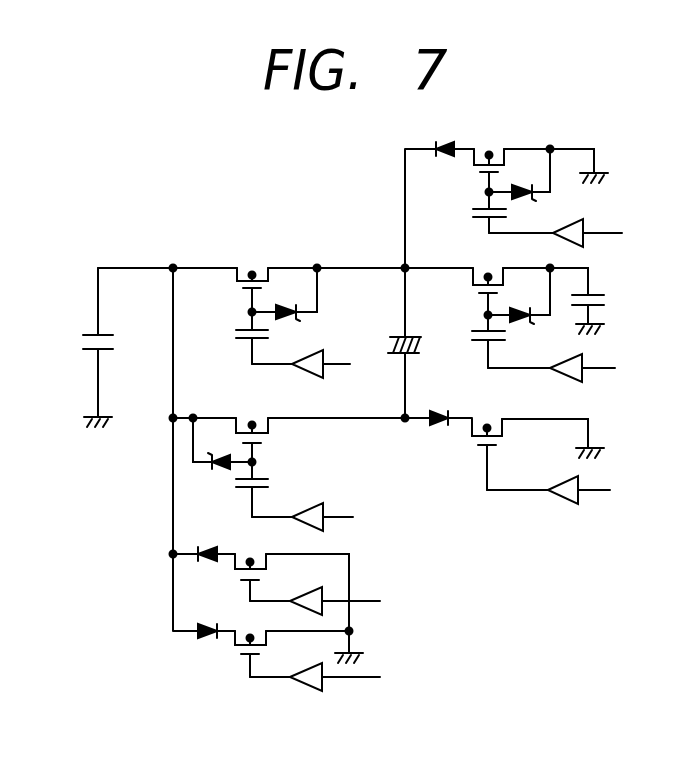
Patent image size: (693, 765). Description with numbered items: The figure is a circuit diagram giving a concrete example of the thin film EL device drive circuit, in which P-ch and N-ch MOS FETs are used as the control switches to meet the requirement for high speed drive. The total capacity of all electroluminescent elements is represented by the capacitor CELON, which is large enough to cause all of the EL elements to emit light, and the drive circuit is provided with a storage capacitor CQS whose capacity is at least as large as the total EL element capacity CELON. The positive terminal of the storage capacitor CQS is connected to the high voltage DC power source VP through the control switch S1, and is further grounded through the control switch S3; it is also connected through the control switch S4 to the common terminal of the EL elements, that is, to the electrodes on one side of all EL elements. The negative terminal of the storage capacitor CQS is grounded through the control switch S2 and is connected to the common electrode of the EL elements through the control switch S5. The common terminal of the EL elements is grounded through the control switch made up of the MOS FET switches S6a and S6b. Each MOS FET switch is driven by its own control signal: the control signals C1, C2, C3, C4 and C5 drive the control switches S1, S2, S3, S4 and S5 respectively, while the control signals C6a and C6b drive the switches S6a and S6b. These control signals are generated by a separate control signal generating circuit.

The control switch S1 is at (495, 318).
The control switch S2 is at (469, 454).
The control switch S3 is at (500, 191).
The control switch S4 is at (260, 316).
The control switch S5 is at (248, 467).
The control switch S6a is at (225, 657).
The control switch S6b is at (225, 581).
The control signal C1 is at (567, 370).
The control signal C2 is at (566, 492).
The control signal C3 is at (571, 234).
The control signal C4 is at (317, 366).
The control signal C5 is at (319, 519).
The control signal C6a is at (338, 679).
The control signal C6b is at (338, 603).
The total EL element capacity CELON is at (70, 342).
The storage capacitor CQS is at (388, 343).
The high voltage DC power source VP is at (606, 309).